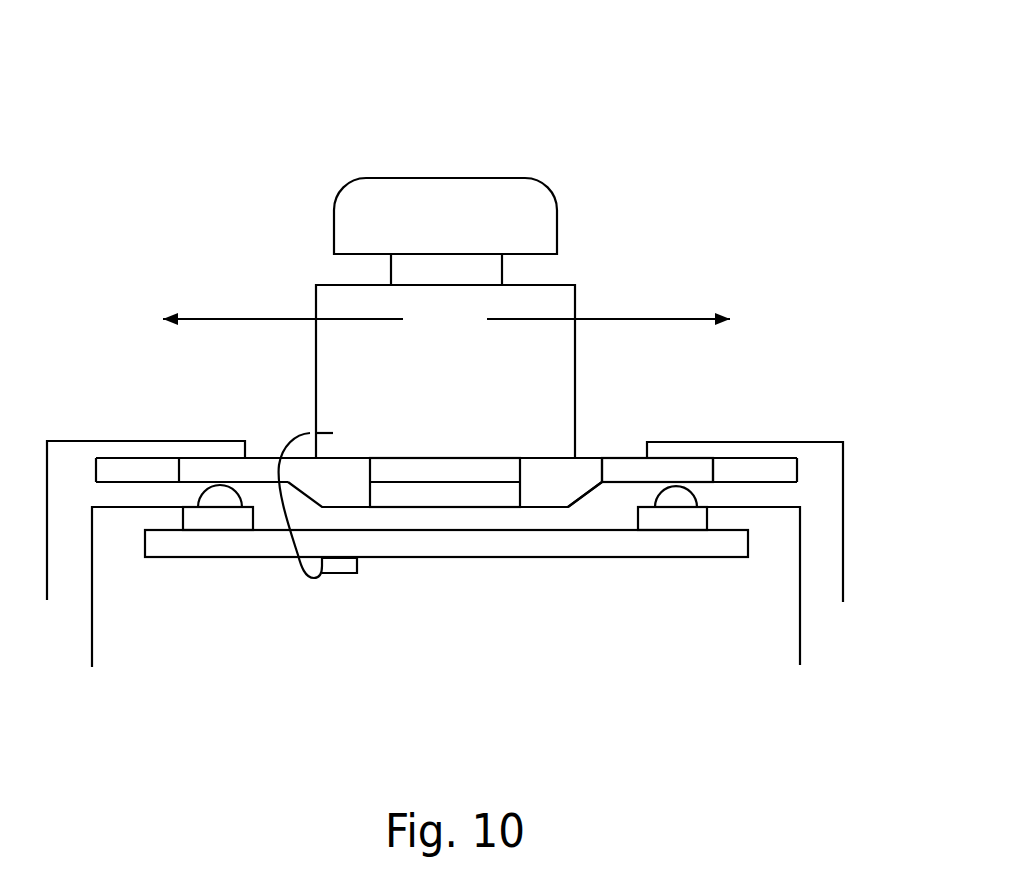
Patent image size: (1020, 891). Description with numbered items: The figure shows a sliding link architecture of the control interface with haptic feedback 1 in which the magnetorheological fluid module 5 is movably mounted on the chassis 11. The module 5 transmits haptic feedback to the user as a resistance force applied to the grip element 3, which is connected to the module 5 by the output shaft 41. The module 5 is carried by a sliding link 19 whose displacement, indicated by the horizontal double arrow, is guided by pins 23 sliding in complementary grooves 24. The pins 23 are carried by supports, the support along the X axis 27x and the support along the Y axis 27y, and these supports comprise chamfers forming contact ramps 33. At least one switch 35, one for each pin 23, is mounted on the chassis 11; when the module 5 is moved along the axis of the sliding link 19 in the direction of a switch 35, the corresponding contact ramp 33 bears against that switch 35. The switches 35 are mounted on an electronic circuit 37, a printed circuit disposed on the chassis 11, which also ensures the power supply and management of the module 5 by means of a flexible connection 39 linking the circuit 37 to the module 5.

The control interface with haptic feedback 1 is at (152, 100).
The grip element 3 is at (523, 195).
The magnetorheological fluid module 5 is at (547, 403).
The chassis 11 is at (70, 450).
The sliding link 19 is at (812, 470).
The pin 23 is at (665, 470).
The groove 24 is at (757, 457).
The support along the X axis 27x is at (445, 483).
The support along the Y axis 27y is at (557, 487).
The contact ramp 33 is at (305, 508).
The switch 35 is at (205, 520).
The electronic circuit 37 is at (740, 552).
The flexible connection 39 is at (290, 424).
The output shaft 41 is at (492, 273).